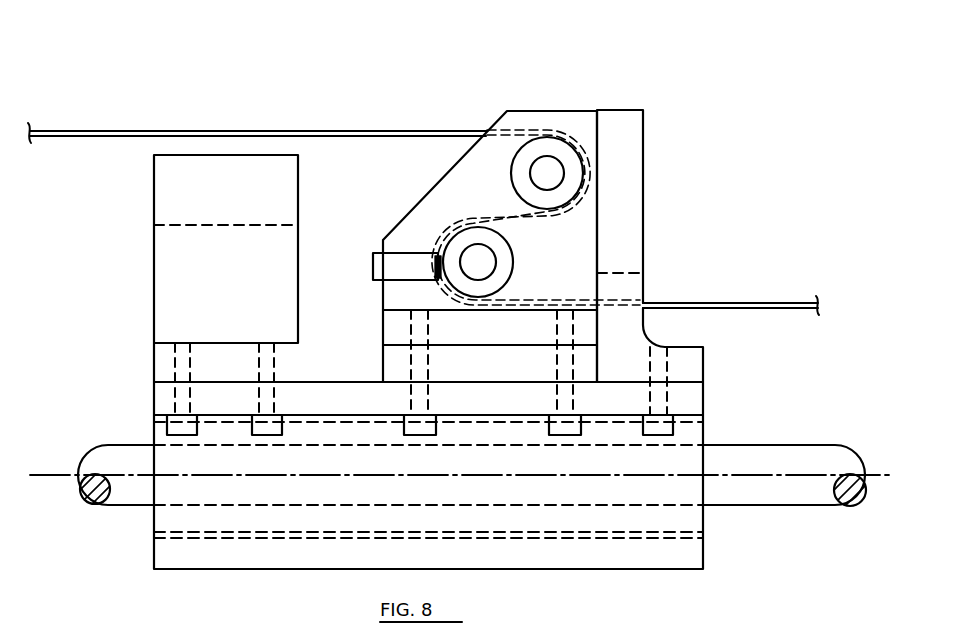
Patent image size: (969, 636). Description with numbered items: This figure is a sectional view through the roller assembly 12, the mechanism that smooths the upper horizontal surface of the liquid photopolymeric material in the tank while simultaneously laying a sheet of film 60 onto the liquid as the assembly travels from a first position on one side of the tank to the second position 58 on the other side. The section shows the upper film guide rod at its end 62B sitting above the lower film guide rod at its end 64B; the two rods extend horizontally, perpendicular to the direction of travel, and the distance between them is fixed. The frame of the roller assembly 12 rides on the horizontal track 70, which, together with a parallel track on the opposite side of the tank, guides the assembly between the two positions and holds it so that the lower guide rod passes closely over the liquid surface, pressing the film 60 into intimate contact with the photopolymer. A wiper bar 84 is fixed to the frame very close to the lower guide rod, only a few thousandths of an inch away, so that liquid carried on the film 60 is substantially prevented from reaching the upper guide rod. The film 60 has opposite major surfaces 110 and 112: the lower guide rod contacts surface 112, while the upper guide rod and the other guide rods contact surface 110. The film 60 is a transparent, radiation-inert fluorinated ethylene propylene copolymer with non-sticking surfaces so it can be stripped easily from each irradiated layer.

The roller assembly 12 is at (650, 138).
The second position 58 is at (523, 104).
The film 60 is at (397, 130).
The end of upper guide rod 62B is at (547, 166).
The end of lower guide rod 64B is at (478, 263).
The track 70 is at (733, 452).
The wiper bar 84 is at (372, 267).
The major surface of film 110 is at (362, 140).
The major surface of film 112 is at (272, 130).